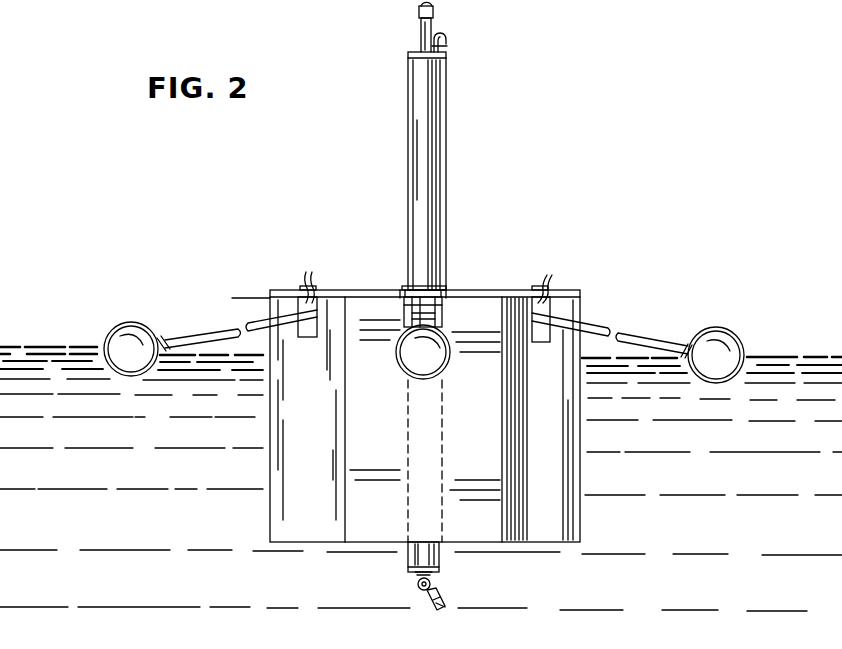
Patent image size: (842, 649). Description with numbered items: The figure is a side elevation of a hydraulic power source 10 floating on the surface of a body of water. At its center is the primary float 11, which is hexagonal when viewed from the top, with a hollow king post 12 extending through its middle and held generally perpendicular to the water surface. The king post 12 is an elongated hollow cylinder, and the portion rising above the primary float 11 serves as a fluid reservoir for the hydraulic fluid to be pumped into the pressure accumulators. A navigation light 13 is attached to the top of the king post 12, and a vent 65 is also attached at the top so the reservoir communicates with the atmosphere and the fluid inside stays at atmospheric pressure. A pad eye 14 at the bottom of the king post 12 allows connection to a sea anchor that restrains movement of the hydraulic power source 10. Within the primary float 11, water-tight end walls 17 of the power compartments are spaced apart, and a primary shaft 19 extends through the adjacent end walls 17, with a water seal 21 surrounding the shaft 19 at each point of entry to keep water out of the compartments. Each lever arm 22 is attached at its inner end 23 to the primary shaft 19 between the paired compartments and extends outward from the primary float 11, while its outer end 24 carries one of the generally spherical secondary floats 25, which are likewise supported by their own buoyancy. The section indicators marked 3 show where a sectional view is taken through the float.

The hydraulic power source 10 is at (575, 172).
The primary float 11 is at (268, 507).
The king post 12 is at (406, 158).
The navigation light 13 is at (417, 6).
The pad eye 14 is at (418, 586).
The end walls 17 is at (430, 297).
The primary shaft 19 is at (405, 306).
The water seal 21 is at (405, 318).
The lever arms 22 is at (234, 328).
The inner end 23 is at (306, 338).
The outer end 24 is at (170, 336).
The secondary floats 25 is at (123, 345).
The vent 65 is at (446, 35).
The section line 3 is at (231, 300).